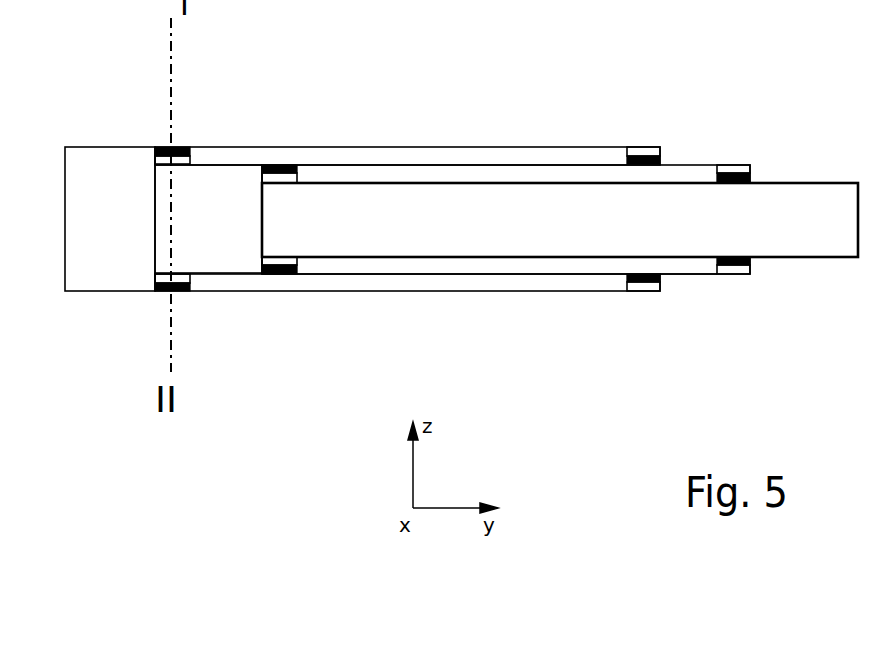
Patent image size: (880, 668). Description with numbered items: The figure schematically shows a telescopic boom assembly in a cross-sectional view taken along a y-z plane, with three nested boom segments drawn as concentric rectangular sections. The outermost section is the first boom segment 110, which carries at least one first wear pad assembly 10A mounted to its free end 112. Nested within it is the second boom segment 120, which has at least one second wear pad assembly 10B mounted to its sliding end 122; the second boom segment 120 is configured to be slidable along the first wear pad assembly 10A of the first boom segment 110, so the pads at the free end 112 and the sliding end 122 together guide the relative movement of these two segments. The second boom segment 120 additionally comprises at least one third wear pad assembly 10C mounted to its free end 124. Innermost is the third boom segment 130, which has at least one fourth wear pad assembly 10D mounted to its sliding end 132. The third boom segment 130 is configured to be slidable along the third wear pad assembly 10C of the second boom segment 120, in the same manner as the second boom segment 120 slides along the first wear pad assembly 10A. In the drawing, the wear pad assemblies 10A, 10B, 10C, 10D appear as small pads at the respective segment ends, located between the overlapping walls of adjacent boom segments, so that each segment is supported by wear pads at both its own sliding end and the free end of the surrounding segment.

The first wear pad assembly 10A is at (636, 147).
The second wear pad assembly 10B is at (170, 146).
The third wear pad assembly 10C is at (731, 164).
The fourth wear pad assembly 10D is at (279, 163).
The first boom segment 110 is at (390, 148).
The free end of the first boom segment 112 is at (651, 140).
The second boom segment 120 is at (428, 165).
The sliding end of the second boom segment 122 is at (158, 226).
The free end of the second boom segment 124 is at (708, 277).
The third boom segment 130 is at (477, 183).
The sliding end of the third boom segment 132 is at (281, 239).